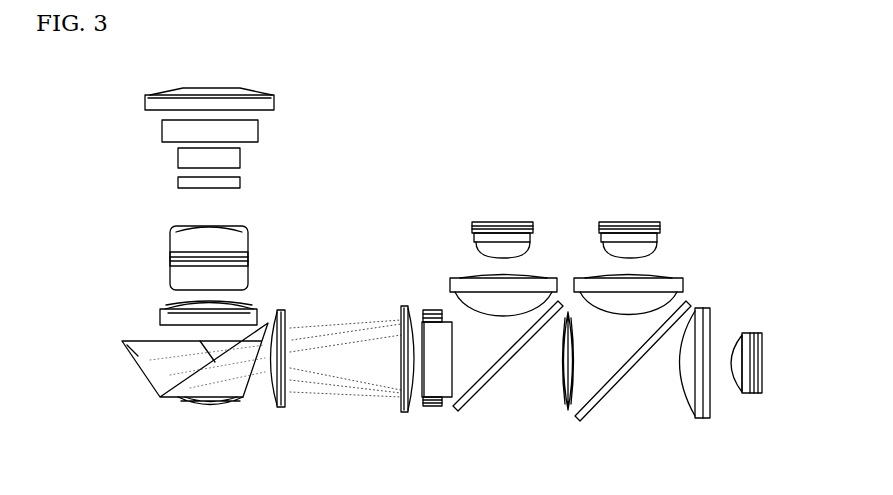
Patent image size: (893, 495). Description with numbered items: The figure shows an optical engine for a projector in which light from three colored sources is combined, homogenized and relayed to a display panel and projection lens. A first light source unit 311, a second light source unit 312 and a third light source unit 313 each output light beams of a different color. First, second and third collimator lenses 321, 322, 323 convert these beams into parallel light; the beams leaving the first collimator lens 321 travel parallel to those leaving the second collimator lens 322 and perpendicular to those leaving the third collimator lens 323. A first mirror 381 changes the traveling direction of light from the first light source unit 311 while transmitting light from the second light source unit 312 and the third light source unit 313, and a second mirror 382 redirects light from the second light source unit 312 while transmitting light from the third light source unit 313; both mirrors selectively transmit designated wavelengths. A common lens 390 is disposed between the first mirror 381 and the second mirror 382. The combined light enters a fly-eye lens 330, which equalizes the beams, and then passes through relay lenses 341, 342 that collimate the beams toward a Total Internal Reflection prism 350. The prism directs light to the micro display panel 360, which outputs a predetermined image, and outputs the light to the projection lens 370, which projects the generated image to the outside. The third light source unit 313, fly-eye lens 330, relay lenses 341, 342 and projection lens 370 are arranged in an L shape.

The first light source unit 311 is at (510, 223).
The second light source unit 312 is at (636, 223).
The third light source unit 313 is at (762, 357).
The first collimator lens 321 is at (548, 278).
The second collimator lens 322 is at (675, 278).
The third collimator lens 323 is at (747, 393).
The fly-eye lens 330 is at (438, 406).
The relay lens 341 is at (405, 306).
The relay lens 342 is at (281, 310).
The Total Internal Reflection (TIR) prism 350 is at (180, 399).
The micro display panel 360 is at (218, 406).
The projection lens 370 is at (128, 80).
The first mirror 381 is at (504, 365).
The second mirror 382 is at (618, 383).
The common lens 390 is at (570, 411).